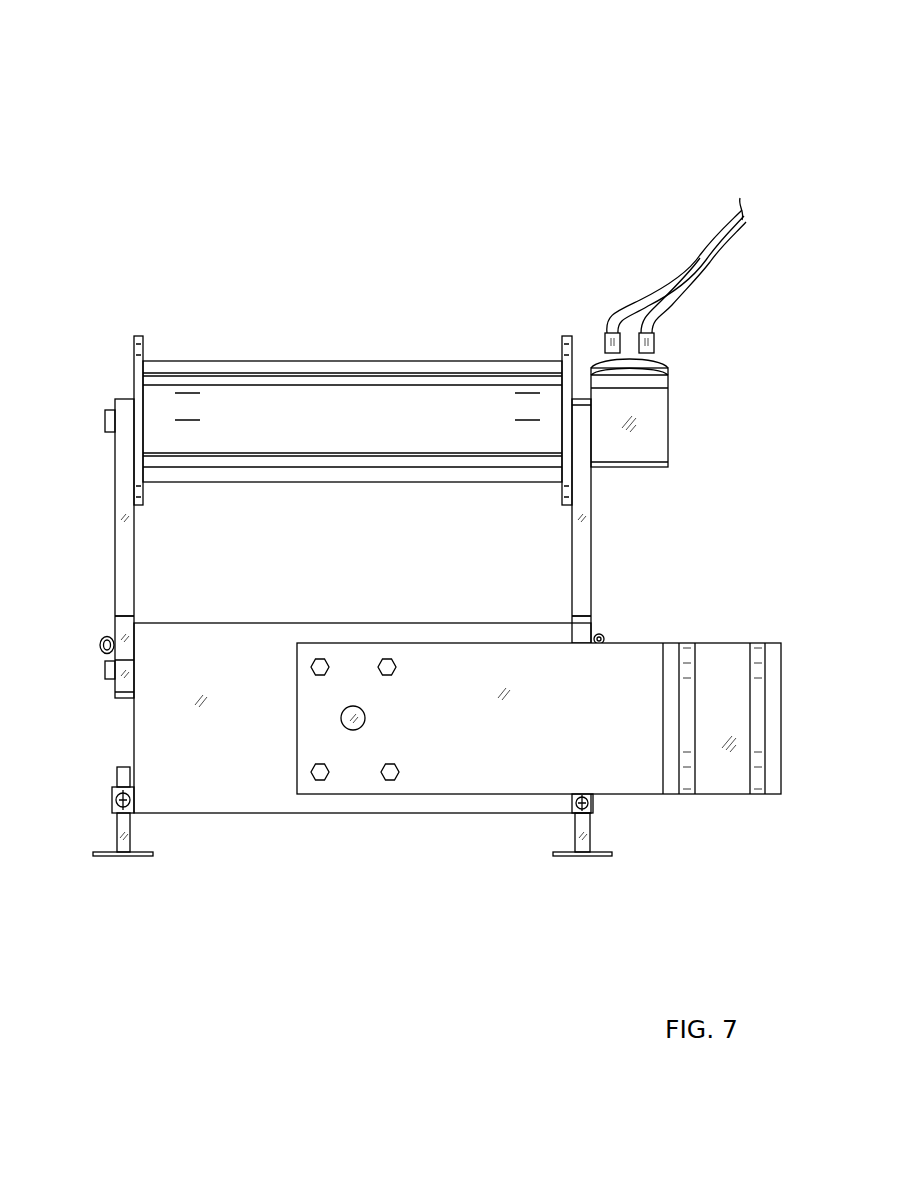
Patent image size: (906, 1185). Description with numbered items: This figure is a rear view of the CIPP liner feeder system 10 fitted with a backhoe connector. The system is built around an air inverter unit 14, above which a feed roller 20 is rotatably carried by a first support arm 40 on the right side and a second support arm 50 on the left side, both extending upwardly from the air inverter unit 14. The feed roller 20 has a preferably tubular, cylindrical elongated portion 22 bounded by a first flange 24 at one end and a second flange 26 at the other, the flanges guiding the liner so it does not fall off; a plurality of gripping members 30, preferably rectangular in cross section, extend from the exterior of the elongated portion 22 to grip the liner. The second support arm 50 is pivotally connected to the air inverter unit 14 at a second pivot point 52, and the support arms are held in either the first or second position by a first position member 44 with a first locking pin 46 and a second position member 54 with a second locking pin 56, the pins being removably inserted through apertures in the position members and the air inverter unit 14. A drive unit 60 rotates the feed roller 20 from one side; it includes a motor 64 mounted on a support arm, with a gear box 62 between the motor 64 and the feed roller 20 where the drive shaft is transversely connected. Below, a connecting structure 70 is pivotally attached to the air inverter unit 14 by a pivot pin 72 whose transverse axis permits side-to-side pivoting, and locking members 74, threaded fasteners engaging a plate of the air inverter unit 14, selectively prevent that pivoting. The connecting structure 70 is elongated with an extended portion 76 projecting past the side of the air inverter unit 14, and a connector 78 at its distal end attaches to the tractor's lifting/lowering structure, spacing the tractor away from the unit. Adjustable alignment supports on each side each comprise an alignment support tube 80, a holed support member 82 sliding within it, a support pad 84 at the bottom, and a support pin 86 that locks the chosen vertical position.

The CIPP liner feeder system 10 is at (638, 89).
The air inverter unit 14 is at (260, 619).
The feed roller 20 is at (353, 388).
The elongated portion 22 is at (440, 360).
The first flange 24 is at (562, 345).
The second flange 26 is at (143, 345).
The gripping members 30 is at (265, 372).
The first support arm 40 is at (619, 521).
The first position member 44 is at (586, 625).
The first locking pin 46 is at (601, 635).
The second support arm 50 is at (93, 565).
The second pivot point 52 is at (104, 670).
The second position member 54 is at (125, 630).
The second locking pin 56 is at (102, 638).
The drive unit 60 is at (670, 362).
The gear box 62 is at (660, 425).
The motor 64 is at (660, 362).
The connecting structure 70 is at (499, 749).
The pivot pin 72 is at (353, 732).
The locking members 74 is at (325, 660).
The extended portion 76 is at (633, 728).
The connector 78 is at (708, 787).
The alignment support tube 80 is at (112, 800).
The support member 82 is at (122, 768).
The support pad 84 is at (148, 856).
The support pin 86 is at (134, 800).